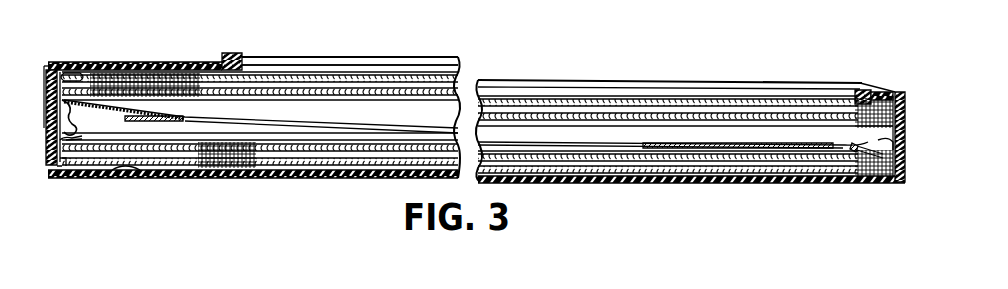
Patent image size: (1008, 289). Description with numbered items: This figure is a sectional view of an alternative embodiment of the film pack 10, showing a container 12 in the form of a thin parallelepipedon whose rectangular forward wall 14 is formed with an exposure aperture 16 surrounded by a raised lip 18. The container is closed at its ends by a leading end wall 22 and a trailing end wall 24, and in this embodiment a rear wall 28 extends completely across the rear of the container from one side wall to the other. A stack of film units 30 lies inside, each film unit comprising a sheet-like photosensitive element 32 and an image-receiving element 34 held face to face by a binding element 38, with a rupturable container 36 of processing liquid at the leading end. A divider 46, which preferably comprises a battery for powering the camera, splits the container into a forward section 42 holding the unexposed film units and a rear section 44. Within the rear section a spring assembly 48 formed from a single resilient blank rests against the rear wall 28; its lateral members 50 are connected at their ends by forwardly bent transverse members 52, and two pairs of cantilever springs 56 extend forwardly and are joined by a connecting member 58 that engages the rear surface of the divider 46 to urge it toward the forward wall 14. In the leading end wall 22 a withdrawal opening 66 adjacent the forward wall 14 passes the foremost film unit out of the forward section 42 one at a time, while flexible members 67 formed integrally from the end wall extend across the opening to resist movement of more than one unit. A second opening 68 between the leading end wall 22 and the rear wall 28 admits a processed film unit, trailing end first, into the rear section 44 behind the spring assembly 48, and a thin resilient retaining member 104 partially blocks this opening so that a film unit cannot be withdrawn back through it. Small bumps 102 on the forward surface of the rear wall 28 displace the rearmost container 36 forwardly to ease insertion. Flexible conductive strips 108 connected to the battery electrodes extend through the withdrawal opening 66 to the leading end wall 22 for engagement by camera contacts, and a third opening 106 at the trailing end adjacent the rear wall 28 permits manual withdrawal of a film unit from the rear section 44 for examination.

The film pack 10 is at (432, 56).
The container 12 is at (580, 82).
The forward wall 14 is at (120, 63).
The exposure aperture 16 is at (243, 57).
The raised lip 18 is at (860, 92).
The leading end wall 22 is at (50, 160).
The trailing end wall 24 is at (910, 120).
The rear wall 28 is at (668, 184).
The film unit 30 is at (290, 153).
The photosensitive element 32 is at (440, 96).
The image-receiving element 34 is at (397, 92).
The rupturable container 36 is at (162, 70).
The binding element 38 is at (236, 154).
The forward section 42 is at (267, 74).
The rear section 44 is at (320, 177).
The divider 46 is at (300, 110).
The spring assembly 48 is at (738, 150).
The lateral members 50 is at (208, 140).
The transverse members 52 is at (78, 140).
The cantilever springs 56 is at (365, 132).
The connecting member 58 is at (148, 122).
The withdrawal opening 66 is at (50, 74).
The flexible members 67 is at (45, 70).
The second opening 68 is at (57, 166).
The bumps 102 is at (126, 166).
The retaining member 104 is at (70, 142).
The third opening 106 is at (896, 176).
The conductive strips 108 is at (86, 117).